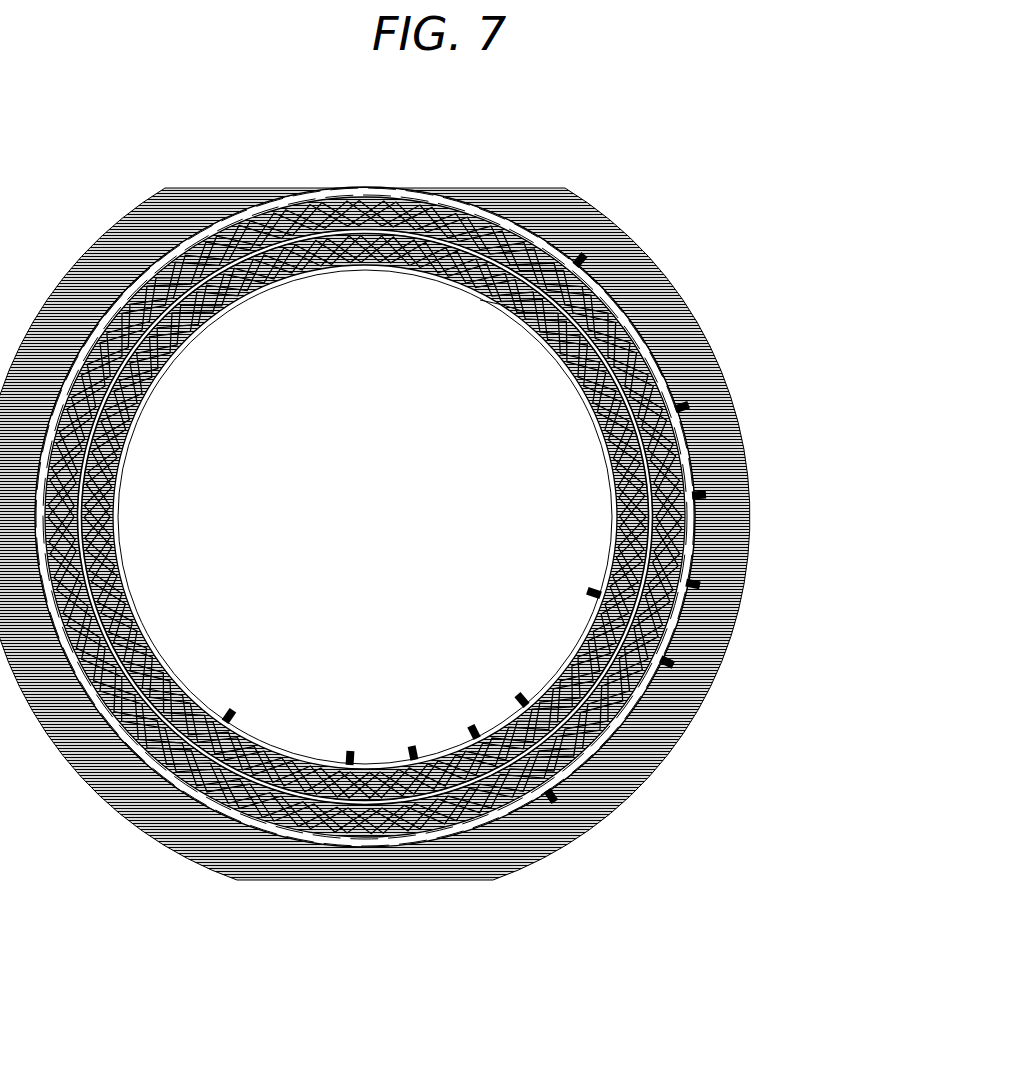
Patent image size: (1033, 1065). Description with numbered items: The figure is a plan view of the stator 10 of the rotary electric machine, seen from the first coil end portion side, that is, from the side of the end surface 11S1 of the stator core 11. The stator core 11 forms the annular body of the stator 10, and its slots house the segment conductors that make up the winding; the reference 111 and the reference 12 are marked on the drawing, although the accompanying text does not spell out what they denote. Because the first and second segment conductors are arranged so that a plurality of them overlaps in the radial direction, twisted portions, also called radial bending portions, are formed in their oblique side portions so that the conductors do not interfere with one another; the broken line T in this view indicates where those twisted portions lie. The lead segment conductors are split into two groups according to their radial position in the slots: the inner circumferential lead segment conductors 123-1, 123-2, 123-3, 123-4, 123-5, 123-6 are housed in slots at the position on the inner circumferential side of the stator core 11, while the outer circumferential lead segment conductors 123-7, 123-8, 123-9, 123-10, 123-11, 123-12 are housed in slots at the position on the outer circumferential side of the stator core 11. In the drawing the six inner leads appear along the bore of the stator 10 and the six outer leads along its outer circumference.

The stator 10 is at (453, 494).
The stator core 11 is at (685, 736).
The end surface 11S1 is at (702, 368).
The stator core 111 is at (603, 485).
The coil 12 is at (622, 338).
The broken line T is at (505, 297).
The inner circumferential lead segment conductor 123-1 is at (232, 710).
The inner circumferential lead segment conductor 123-2 is at (350, 755).
The inner circumferential lead segment conductor 123-3 is at (413, 750).
The inner circumferential lead segment conductor 123-4 is at (471, 725).
The inner circumferential lead segment conductor 123-5 is at (523, 697).
The inner circumferential lead segment conductor 123-6 is at (590, 593).
The outer circumferential lead segment conductor 123-7 is at (556, 797).
The outer circumferential lead segment conductor 123-8 is at (674, 663).
The outer circumferential lead segment conductor 123-9 is at (700, 585).
The outer circumferential lead segment conductor 123-10 is at (704, 496).
The outer circumferential lead segment conductor 123-11 is at (690, 407).
The outer circumferential lead segment conductor 123-12 is at (585, 262).